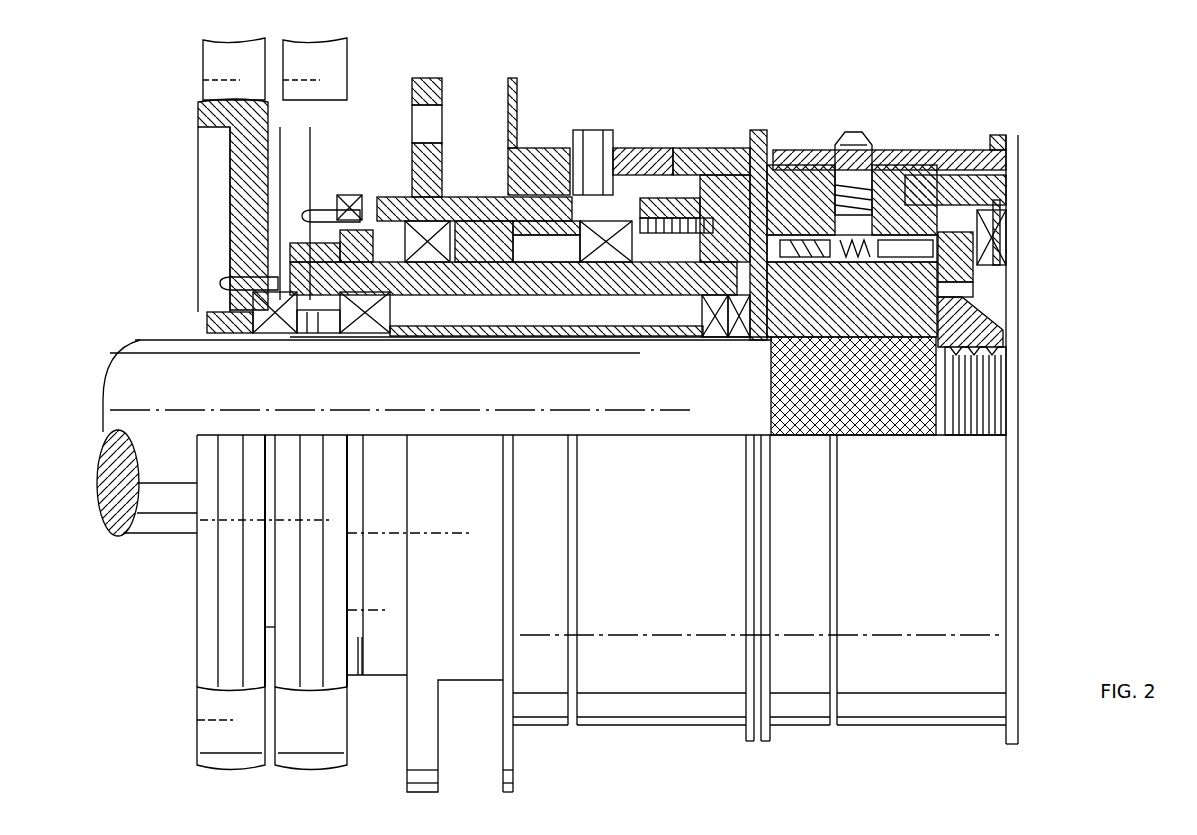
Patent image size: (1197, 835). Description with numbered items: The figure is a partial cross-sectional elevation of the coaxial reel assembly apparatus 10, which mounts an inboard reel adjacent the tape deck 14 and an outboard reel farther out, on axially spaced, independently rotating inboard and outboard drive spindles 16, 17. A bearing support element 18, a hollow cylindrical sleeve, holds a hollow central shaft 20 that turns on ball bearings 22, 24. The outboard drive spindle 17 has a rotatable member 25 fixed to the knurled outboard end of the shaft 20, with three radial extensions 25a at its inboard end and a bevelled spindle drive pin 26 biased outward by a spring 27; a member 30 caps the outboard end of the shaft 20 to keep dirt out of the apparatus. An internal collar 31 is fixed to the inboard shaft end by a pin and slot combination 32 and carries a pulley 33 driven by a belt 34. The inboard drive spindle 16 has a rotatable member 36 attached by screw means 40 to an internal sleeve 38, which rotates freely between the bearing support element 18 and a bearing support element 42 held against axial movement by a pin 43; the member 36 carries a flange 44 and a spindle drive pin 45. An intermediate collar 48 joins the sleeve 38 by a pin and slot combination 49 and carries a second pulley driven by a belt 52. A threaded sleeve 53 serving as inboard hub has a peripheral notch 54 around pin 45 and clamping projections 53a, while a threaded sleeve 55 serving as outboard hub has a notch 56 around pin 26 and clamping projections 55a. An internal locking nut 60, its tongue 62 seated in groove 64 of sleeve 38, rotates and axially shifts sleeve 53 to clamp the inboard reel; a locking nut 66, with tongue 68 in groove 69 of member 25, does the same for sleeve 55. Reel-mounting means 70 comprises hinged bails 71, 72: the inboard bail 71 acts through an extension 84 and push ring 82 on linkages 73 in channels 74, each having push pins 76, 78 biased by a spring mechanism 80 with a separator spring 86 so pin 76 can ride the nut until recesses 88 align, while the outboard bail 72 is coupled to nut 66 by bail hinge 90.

The coaxial reel assembly apparatus 10 is at (625, 76).
The tape deck 14 is at (425, 85).
The inboard drive spindle 16 is at (739, 133).
The outboard drive spindle 17 is at (944, 104).
The bearing support element 18 is at (628, 342).
The hollow central shaft 20 is at (118, 416).
The ball bearing 22 is at (380, 337).
The ball bearing 24 is at (680, 342).
The rotatable member 25 is at (852, 140).
The extensions 25a is at (790, 148).
The spindle drive pin 26 is at (873, 150).
The spring 27 is at (905, 152).
The member 30 is at (990, 378).
The internal collar 31 is at (255, 335).
The pin and slot combination 32 is at (322, 335).
The pulley 33 is at (210, 113).
The belt 34 is at (215, 64).
The rotatable member 36 is at (530, 165).
The internal sleeve 38 is at (458, 205).
The screw means 40 is at (720, 178).
The bearing support element 42 is at (528, 280).
The pin 43 is at (478, 235).
The flange 44 is at (513, 80).
The spindle drive pin 45 is at (592, 145).
The intermediate collar 48 is at (358, 198).
The pin and slot combination 49 is at (388, 232).
The belt 52 is at (332, 60).
The threaded sleeve 53 is at (672, 148).
The clamping projections 53a is at (760, 140).
The peripheral notch 54 is at (628, 150).
The threaded sleeve 55 is at (980, 150).
The clamping projections 55a is at (1018, 138).
The notch 56 is at (872, 150).
The internal locking nut 60 is at (672, 296).
The circumferential tongue 62 is at (742, 340).
The circumferential groove 64 is at (716, 340).
The locking nut 66 is at (1005, 202).
The circumferential tongue 68 is at (1005, 185).
The circumferential groove 69 is at (1005, 212).
The reel-mounting means 70 is at (1108, 319).
The inboard bail 71 is at (1006, 260).
The outboard bail 72 is at (1006, 232).
The spring-loaded linkage 73 is at (774, 360).
The channels 74 is at (870, 360).
The inboard push pin 76 is at (766, 340).
The push pin 78 is at (962, 282).
The spring mechanism 80 is at (808, 370).
The push ring 82 is at (975, 270).
The extension 84 is at (1006, 252).
The separator spring 86 is at (990, 322).
The pin-receiving recesses 88 is at (795, 180).
The bail hinge 90 is at (1006, 242).